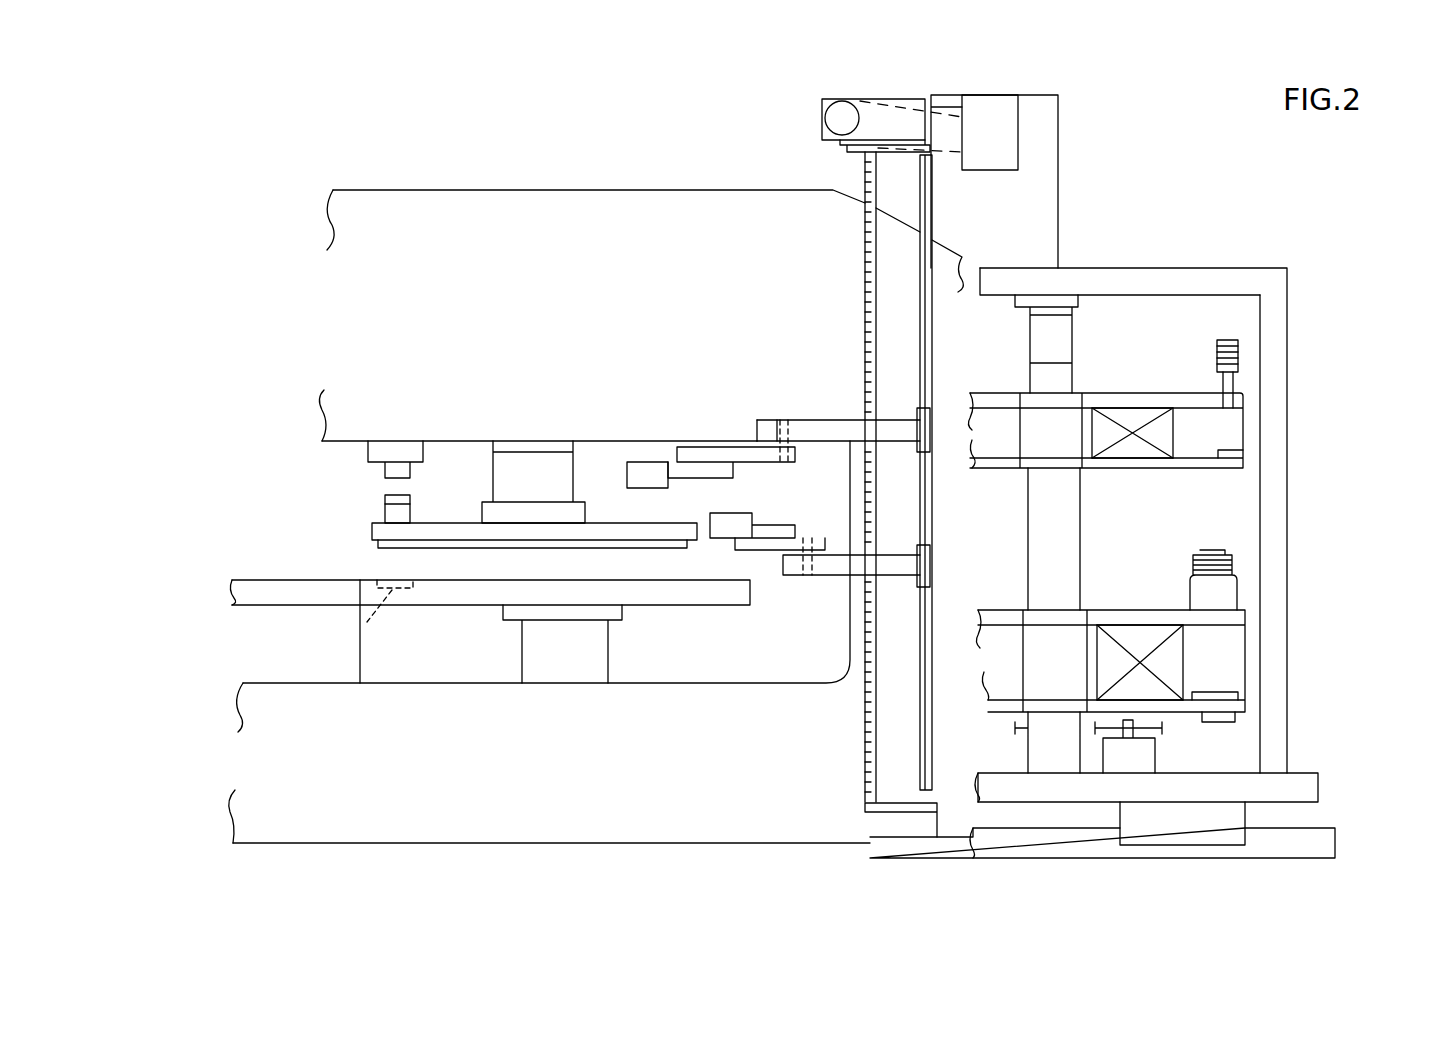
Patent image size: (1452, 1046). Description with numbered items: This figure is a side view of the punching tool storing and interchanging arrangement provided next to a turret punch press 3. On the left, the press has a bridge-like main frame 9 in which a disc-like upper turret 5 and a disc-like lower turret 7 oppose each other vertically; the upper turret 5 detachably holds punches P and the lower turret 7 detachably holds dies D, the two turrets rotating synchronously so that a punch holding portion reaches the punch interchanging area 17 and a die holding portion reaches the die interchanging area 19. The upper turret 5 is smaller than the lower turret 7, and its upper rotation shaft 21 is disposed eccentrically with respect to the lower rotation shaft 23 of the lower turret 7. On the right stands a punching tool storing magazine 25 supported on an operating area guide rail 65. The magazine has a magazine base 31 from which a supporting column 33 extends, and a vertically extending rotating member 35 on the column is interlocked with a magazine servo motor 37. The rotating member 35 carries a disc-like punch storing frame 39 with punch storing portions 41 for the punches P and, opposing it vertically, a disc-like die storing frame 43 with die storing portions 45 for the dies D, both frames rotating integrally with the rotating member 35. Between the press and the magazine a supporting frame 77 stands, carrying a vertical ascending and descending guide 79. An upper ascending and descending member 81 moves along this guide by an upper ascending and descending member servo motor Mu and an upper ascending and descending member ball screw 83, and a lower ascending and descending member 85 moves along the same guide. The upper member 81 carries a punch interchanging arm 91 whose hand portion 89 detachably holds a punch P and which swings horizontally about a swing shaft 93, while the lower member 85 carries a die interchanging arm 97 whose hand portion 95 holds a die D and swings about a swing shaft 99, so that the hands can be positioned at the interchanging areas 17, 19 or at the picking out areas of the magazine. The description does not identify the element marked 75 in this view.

The turret punch press 3 is at (345, 167).
The upper turret 5 is at (372, 532).
The lower turret 7 is at (362, 580).
The main frame 9 is at (468, 190).
The punch interchanging area 17 is at (656, 493).
The die interchanging area 19 is at (716, 562).
The upper rotation shaft 21 is at (494, 458).
The lower rotation shaft 23 is at (525, 654).
The punching tool storing magazine 25 is at (1297, 283).
The magazine base 31 is at (1318, 785).
The supporting column 33 is at (1145, 268).
The rotating member 35 is at (1068, 342).
The magazine servo motor 37 is at (1155, 752).
The punch storing frame 39 is at (1145, 393).
The punch storing portion 41 is at (1240, 395).
The die storing frame 43 is at (1178, 470).
The die storing portion 45 is at (1243, 462).
The operating area guide rail 65 is at (1052, 845).
The die transfer device 75 is at (636, 362).
The supporting frame 77 is at (1000, 200).
The ascending and descending guide 79 is at (920, 202).
The upper ascending and descending member 81 is at (845, 420).
The upper ascending and descending member ball screw 83 is at (865, 258).
The lower ascending and descending member 85 is at (832, 575).
The hand portion 89 is at (645, 462).
The punch interchanging arm 91 is at (701, 447).
The swing shaft 93 is at (777, 420).
The hand portion 95 is at (728, 513).
The die interchanging arm 97 is at (763, 550).
The swing shaft 99 is at (805, 575).
The punch P is at (385, 500).
The die D is at (362, 622).
The upper ascending and descending member servo motor Mu is at (920, 132).